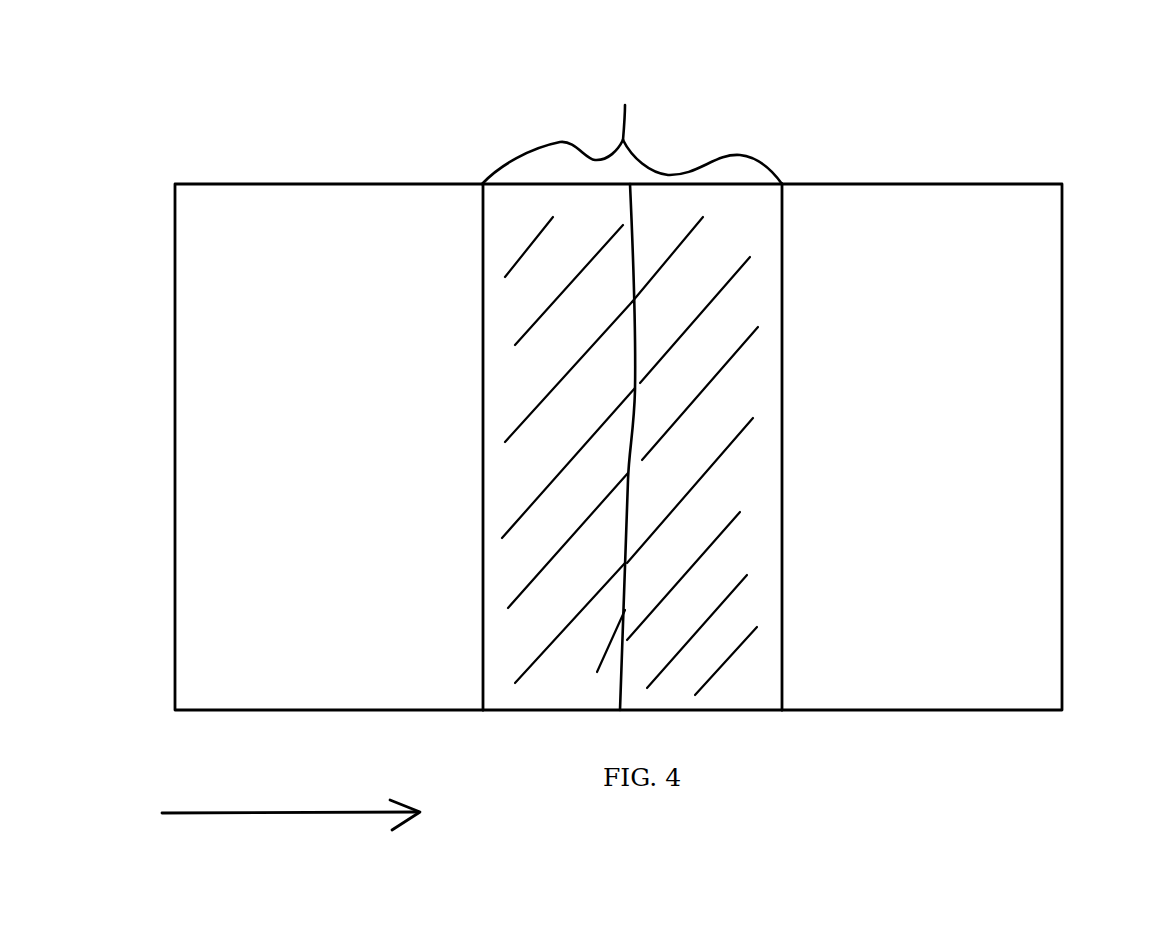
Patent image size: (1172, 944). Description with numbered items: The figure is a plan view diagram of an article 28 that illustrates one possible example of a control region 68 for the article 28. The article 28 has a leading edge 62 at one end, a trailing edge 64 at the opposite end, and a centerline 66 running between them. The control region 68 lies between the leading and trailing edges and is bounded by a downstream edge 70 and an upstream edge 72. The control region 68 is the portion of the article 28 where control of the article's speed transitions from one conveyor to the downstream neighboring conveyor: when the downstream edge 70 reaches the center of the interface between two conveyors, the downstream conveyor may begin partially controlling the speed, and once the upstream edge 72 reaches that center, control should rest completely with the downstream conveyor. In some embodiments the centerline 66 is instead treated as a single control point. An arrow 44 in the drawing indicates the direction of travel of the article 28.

The article 28 is at (685, 147).
The direction of travel 44 is at (298, 815).
The leading edge 62 is at (1062, 492).
The trailing edge 64 is at (175, 552).
The centerline 66 is at (623, 612).
The control region 68 is at (620, 96).
The downstream edge 70 is at (782, 475).
The upstream edge 72 is at (483, 511).